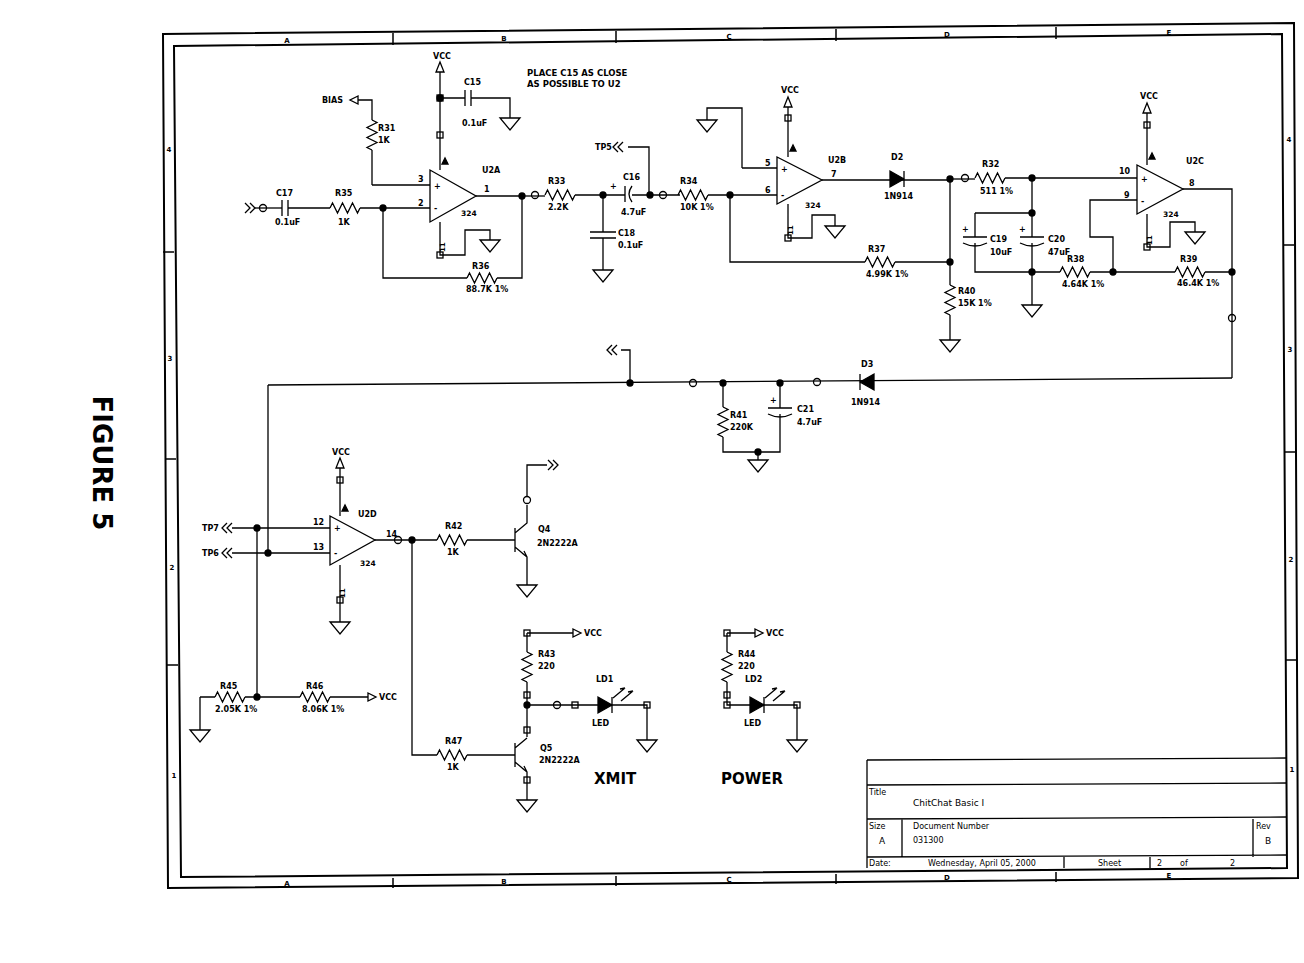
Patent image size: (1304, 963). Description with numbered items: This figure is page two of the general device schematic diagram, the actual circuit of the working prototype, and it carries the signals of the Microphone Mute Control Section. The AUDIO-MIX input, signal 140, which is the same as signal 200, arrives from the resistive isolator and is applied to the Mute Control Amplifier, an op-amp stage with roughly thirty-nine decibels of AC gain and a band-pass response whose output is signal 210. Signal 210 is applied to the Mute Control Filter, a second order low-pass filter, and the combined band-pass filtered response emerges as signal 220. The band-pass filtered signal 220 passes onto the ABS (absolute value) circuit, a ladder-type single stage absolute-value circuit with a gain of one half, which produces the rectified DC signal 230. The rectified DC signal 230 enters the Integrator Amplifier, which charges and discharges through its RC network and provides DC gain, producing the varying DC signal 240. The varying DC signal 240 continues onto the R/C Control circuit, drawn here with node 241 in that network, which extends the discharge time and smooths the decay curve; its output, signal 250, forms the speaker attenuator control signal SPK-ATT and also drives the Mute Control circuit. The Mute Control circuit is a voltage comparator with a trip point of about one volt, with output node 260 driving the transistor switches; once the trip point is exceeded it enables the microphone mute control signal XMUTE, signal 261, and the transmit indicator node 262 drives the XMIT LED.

The AUDIO-MIX signal 140 is at (218, 219).
The AUDIO-MIX signal 200 is at (267, 214).
The Mute Control Amplifier output signal 210 is at (538, 190).
The band-pass filtered signal 220 is at (666, 190).
The rectified DC signal 230 is at (968, 173).
The varying DC signal 240 is at (1236, 316).
The diode input node 241 is at (820, 377).
The speaker attenuator control signal 250 is at (706, 358).
The comparator output node 260 is at (402, 535).
The microphone mute control signal 261 is at (530, 497).
The transmit LED drive node 262 is at (560, 700).